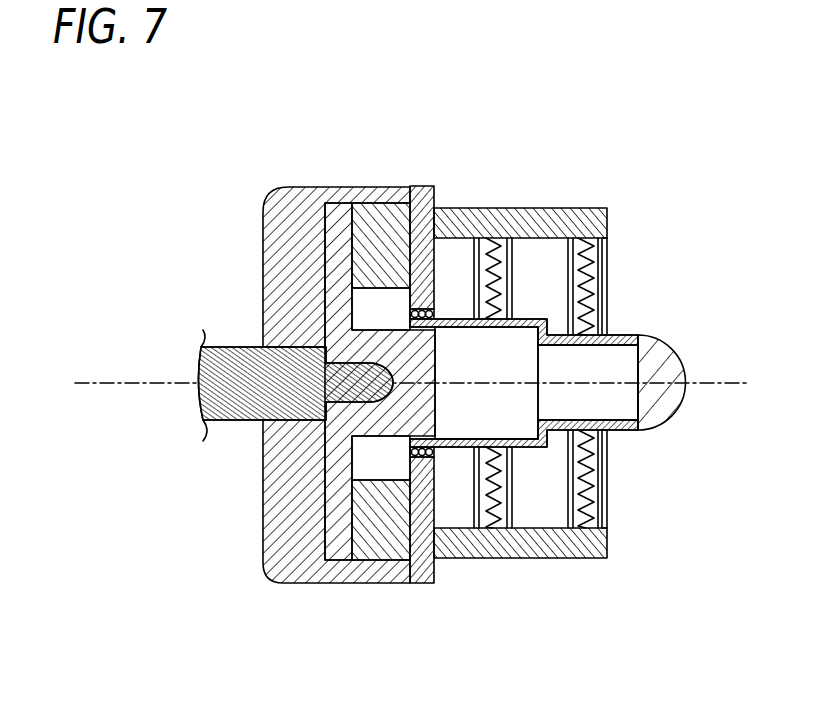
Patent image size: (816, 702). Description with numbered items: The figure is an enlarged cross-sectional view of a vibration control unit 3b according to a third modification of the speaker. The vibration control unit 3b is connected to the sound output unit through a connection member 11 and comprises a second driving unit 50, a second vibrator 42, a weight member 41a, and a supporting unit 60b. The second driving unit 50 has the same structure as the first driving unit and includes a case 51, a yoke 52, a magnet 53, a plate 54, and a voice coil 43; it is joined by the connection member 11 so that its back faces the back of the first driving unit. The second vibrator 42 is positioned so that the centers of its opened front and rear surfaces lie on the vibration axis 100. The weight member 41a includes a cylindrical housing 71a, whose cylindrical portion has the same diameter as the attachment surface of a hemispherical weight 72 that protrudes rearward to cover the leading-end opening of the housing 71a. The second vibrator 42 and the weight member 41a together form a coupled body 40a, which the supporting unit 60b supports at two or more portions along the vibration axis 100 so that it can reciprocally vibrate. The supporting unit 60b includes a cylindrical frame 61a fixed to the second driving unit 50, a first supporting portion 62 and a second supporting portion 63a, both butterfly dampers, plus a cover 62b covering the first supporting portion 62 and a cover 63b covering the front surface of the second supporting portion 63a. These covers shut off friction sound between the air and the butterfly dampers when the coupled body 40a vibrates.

The vibration control unit 3b is at (412, 393).
The connection member 11 is at (232, 424).
The vibration axis 100 is at (108, 368).
The coupled body 40a is at (569, 477).
The weight member 41a is at (632, 450).
The second vibrator 42 is at (523, 444).
The voice coil 43 is at (426, 310).
The second driving unit 50 is at (309, 391).
The case 51 is at (288, 584).
The yoke 52 is at (343, 561).
The magnet 53 is at (378, 561).
The plate 54 is at (422, 584).
The supporting unit 60b is at (549, 321).
The frame 61a is at (568, 196).
The first supporting portion 62 is at (508, 258).
The cover 62b is at (474, 268).
The second supporting portion 63a is at (598, 244).
The cover 63b is at (602, 282).
The housing 71a is at (630, 320).
The weight 72 is at (682, 362).